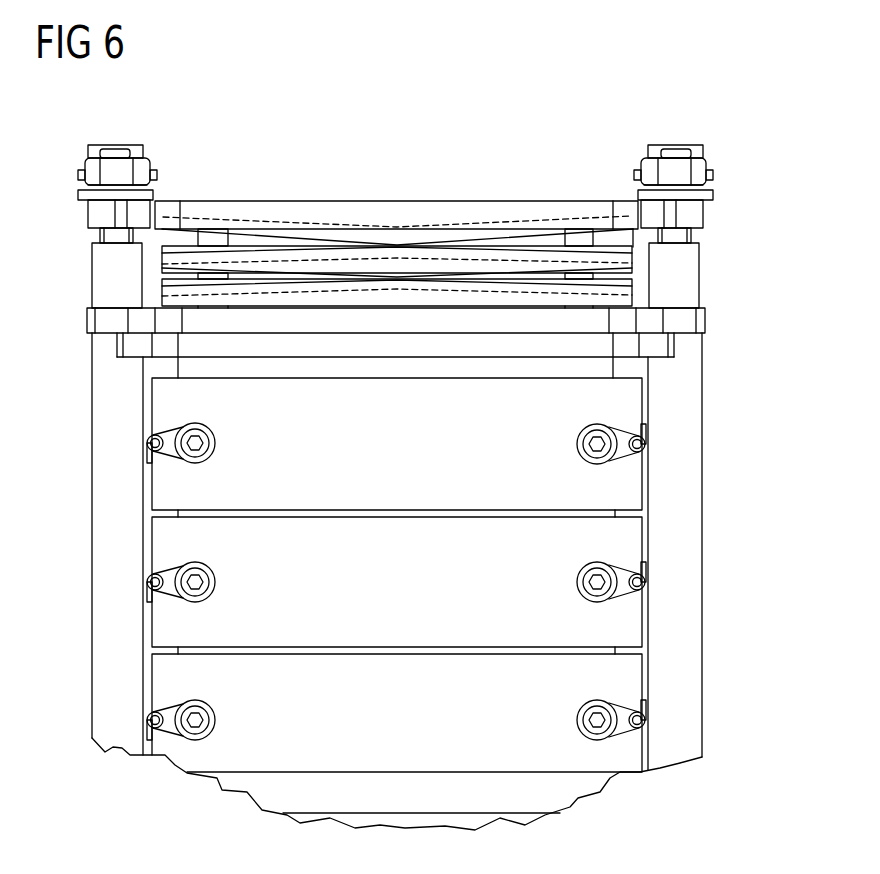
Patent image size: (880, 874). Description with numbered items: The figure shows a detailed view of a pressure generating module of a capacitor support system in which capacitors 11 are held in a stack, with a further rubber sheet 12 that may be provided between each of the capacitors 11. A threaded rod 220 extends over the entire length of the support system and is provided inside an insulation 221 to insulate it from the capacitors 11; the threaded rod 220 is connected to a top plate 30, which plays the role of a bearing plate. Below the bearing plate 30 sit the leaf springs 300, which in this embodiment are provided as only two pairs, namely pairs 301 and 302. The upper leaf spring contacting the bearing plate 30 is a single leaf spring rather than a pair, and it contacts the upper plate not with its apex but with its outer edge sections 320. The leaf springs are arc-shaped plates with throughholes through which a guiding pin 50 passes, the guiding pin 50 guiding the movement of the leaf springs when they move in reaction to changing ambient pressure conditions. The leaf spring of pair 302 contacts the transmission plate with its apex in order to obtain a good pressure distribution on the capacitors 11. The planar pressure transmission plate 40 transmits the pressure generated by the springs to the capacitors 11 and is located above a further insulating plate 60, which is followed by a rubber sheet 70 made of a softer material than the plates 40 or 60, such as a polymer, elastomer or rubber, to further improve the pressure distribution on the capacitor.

The capacitor 11 is at (628, 403).
The rubber sheet 12 is at (562, 512).
The top plate 30 is at (473, 212).
The pressure transmission plate 40 is at (476, 323).
The guiding pin 50 is at (578, 240).
The insulating plate 60 is at (423, 345).
The rubber sheet 70 is at (373, 367).
The threaded rod 220 is at (665, 235).
The insulation 221 is at (690, 277).
The leaf springs 300 is at (538, 293).
The first pair of leaf springs 301 is at (150, 258).
The second pair of leaf springs 302 is at (150, 292).
The outer edge sections 320 is at (627, 222).